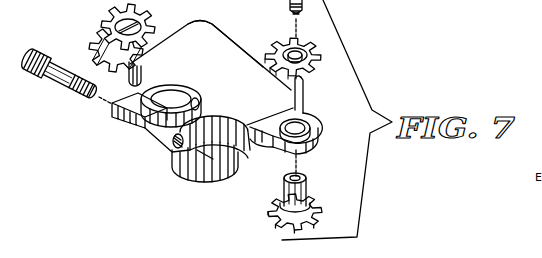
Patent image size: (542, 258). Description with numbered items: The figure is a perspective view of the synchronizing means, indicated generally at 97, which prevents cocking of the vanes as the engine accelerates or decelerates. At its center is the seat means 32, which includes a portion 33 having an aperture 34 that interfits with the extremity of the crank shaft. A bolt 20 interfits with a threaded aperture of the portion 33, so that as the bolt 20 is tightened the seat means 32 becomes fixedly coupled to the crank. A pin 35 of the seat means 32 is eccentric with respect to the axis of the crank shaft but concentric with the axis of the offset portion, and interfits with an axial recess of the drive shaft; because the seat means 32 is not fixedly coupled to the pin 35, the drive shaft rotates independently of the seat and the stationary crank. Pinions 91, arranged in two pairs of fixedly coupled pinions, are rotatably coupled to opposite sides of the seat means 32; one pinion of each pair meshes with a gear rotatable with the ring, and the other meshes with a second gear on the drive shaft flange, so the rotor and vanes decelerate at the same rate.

The bolt 20 is at (68, 72).
The seat means 32 is at (202, 115).
The portion 33 is at (250, 56).
The aperture 34 is at (114, 108).
The pin 35 is at (201, 168).
The sprocket 91 is at (316, 62).
The sprocket and clamp assembly 97 is at (107, 153).